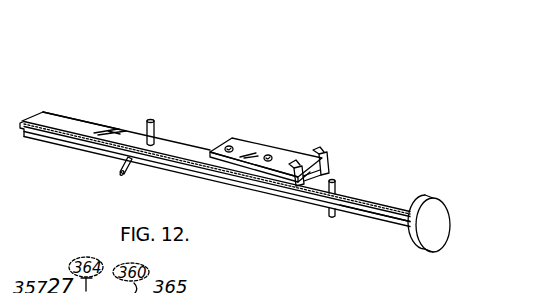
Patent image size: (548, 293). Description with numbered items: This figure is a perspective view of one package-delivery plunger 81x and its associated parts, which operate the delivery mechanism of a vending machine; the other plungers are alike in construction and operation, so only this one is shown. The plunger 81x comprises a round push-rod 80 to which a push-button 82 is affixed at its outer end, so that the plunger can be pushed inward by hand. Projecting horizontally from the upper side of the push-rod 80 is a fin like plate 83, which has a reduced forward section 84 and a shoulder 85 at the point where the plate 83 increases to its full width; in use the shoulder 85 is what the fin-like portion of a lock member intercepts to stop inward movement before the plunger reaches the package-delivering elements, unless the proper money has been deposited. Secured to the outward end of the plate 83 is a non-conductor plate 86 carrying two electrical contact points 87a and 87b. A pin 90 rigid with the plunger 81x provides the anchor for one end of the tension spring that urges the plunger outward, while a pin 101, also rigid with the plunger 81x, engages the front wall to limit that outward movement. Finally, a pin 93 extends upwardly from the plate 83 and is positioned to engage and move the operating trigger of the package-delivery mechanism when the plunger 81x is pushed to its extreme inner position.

The push-rod 80 is at (245, 177).
The plunger 81x is at (371, 220).
The push-button 82 is at (433, 252).
The fin like plate 83 is at (192, 145).
The reduced forward section 84 is at (57, 123).
The shoulder 85 is at (78, 122).
The non-conductor plate 86 is at (283, 147).
The electrical contact point 87a is at (332, 167).
The electrical contact point 87b is at (323, 157).
The pin 90 is at (122, 173).
The pin 93 is at (155, 120).
The pin 101 is at (337, 184).